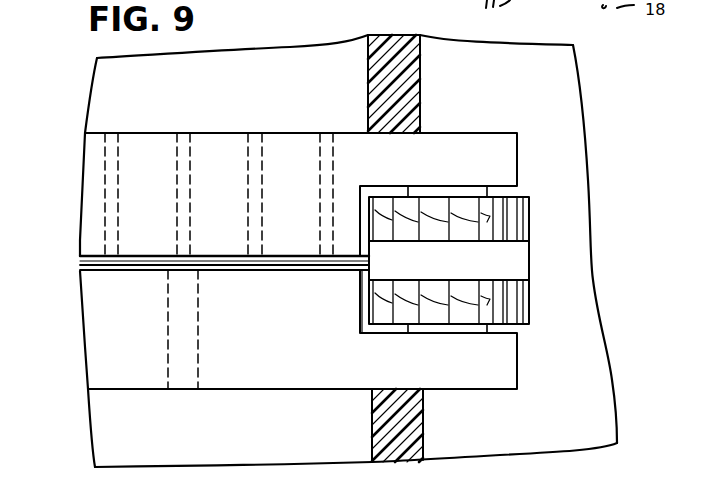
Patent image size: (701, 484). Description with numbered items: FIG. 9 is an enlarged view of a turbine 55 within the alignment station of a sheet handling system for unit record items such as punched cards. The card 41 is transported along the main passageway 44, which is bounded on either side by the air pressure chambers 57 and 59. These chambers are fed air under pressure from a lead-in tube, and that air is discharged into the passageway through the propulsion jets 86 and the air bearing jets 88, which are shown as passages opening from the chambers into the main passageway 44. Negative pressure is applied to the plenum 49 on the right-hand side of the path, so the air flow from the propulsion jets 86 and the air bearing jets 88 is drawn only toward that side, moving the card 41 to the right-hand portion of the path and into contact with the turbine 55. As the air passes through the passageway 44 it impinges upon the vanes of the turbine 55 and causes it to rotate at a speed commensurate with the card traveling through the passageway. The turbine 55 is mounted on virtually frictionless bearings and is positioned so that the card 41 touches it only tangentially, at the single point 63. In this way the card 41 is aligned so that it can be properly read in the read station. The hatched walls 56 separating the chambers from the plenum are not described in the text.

The card 41 is at (78, 268).
The main passageway 44 is at (100, 271).
The plenum 49 is at (546, 94).
The turbine 55 is at (540, 232).
The insulating wall 56 is at (421, 73).
The air pressure chamber 57 is at (256, 446).
The air pressure chamber 59 is at (158, 97).
The point 63 is at (360, 271).
The propulsion jets 86 is at (184, 389).
The air bearing jets 88 is at (322, 134).